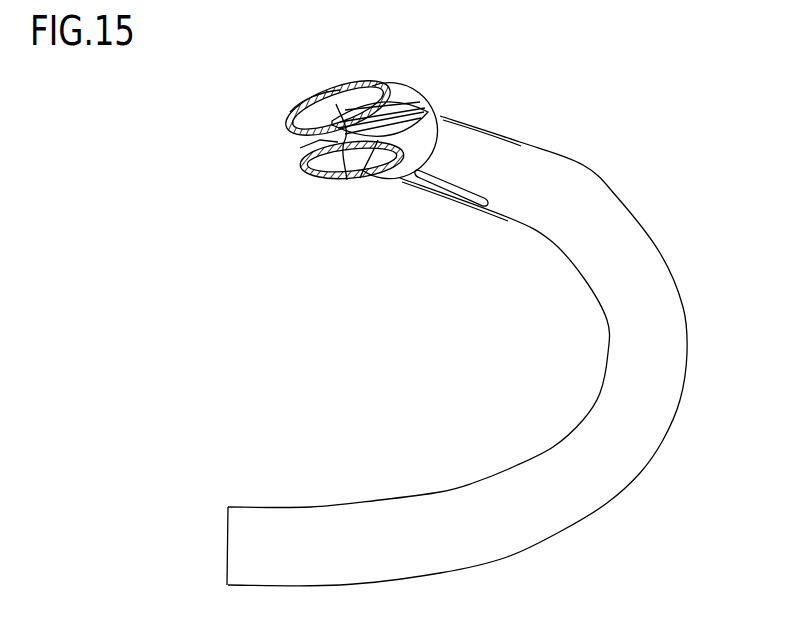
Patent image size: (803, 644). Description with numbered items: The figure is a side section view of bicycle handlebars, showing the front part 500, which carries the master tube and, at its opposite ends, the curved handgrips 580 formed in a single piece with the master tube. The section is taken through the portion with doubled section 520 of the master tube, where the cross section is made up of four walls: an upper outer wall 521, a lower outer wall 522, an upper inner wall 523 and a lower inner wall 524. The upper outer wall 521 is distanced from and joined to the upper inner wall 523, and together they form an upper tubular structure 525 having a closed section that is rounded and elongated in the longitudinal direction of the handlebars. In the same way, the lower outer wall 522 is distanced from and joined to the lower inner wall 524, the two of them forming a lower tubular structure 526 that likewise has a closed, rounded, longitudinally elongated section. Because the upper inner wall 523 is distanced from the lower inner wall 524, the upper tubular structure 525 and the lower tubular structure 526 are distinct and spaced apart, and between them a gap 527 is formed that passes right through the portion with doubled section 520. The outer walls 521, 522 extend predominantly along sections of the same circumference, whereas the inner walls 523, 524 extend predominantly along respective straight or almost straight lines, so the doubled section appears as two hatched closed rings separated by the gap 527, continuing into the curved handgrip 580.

The front part 500 is at (650, 105).
The portion with doubled section 520 is at (296, 78).
The upper outer wall 521 is at (322, 88).
The lower outer wall 522 is at (358, 178).
The upper inner wall 523 is at (346, 114).
The lower inner wall 524 is at (347, 180).
The upper tubular structure 525 is at (283, 111).
The lower tubular structure 526 is at (314, 179).
The gap 527 is at (297, 150).
The handgrip 580 is at (305, 543).